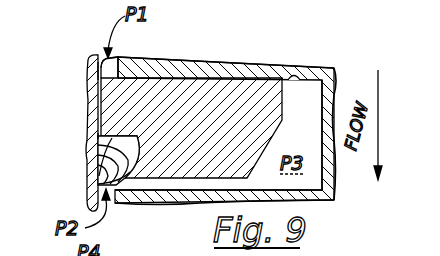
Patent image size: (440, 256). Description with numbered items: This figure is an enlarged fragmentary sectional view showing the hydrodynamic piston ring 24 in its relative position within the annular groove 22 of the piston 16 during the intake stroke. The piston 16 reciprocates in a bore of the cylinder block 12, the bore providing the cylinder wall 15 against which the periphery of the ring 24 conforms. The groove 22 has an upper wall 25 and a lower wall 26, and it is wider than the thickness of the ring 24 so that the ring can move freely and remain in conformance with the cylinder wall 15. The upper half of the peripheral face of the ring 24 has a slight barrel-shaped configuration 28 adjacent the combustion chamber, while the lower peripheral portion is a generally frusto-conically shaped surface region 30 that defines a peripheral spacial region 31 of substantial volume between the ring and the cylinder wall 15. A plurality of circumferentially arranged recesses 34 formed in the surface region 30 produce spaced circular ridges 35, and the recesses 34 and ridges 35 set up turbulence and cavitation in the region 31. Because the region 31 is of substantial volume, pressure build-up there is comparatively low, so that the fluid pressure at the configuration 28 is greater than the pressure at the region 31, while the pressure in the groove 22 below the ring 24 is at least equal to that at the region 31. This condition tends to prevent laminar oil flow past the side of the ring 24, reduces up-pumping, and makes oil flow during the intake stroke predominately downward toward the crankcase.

The cylinder block 12 is at (92, 90).
The cylinder wall 15 is at (102, 55).
The piston 16 is at (174, 66).
The annular groove 22 is at (302, 132).
The hydrodynamic piston ring 24 is at (228, 88).
The upper wall of groove 25 is at (292, 78).
The lower wall of groove 26 is at (276, 183).
The barrel-shaped configuration 28 is at (96, 78).
The frusto-conically shaped surface region 30 is at (130, 172).
The peripheral spacial region 31 is at (94, 135).
The recesses 34 is at (137, 136).
The circular ridges 35 is at (124, 166).